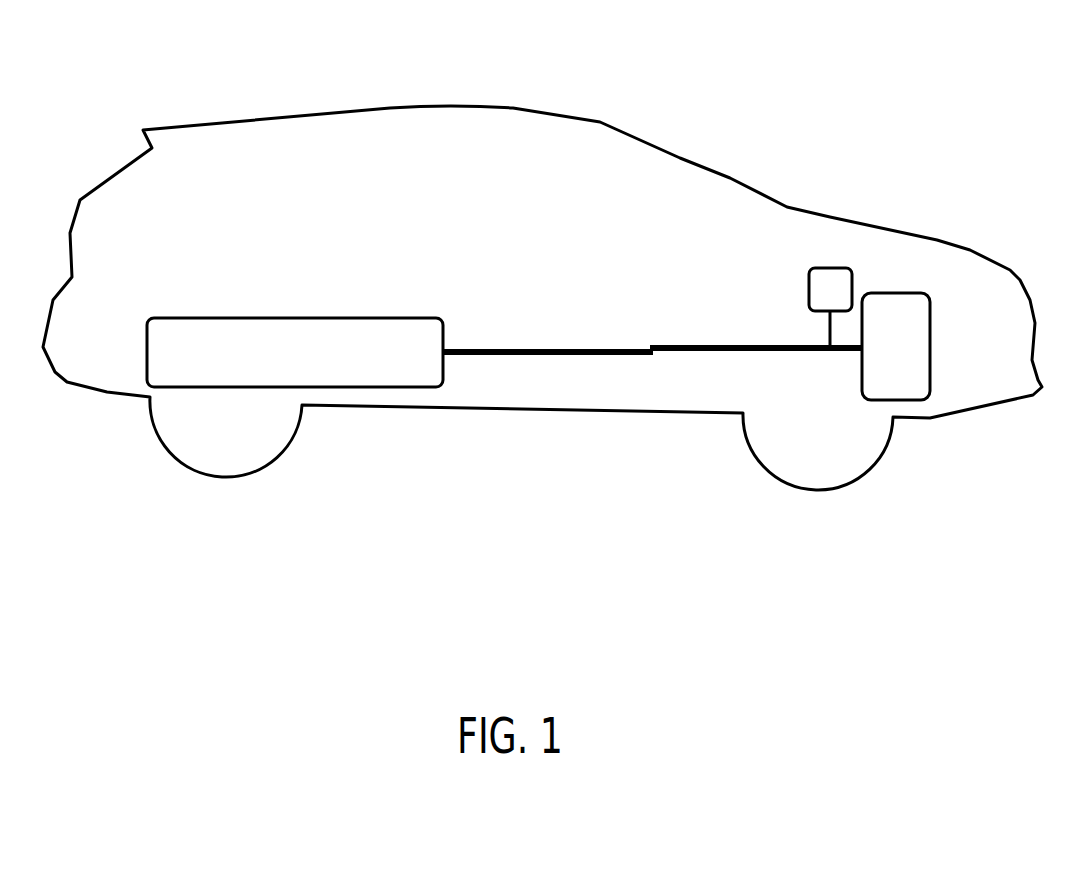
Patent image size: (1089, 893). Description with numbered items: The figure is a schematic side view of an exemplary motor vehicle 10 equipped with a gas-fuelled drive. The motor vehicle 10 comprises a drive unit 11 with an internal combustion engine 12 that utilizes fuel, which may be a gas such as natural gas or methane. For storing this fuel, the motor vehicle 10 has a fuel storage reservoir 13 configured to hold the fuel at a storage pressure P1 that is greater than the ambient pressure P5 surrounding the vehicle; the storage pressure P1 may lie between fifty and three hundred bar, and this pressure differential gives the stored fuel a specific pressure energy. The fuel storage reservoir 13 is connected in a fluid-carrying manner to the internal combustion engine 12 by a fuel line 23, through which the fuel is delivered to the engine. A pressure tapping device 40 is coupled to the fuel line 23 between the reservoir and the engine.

The motor vehicle 10 is at (853, 155).
The drive unit 11 is at (513, 318).
The internal combustion engine 12 is at (915, 349).
The fuel storage reservoir 13 is at (314, 369).
The fuel line 23 is at (698, 345).
The pressure tapping device 40 is at (808, 287).
The storage pressure P1 is at (268, 328).
The ambient pressure P5 is at (942, 273).